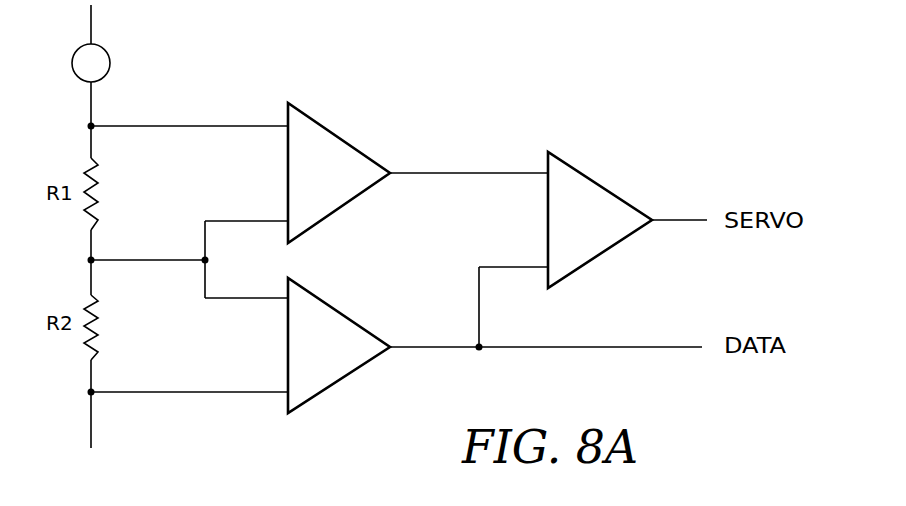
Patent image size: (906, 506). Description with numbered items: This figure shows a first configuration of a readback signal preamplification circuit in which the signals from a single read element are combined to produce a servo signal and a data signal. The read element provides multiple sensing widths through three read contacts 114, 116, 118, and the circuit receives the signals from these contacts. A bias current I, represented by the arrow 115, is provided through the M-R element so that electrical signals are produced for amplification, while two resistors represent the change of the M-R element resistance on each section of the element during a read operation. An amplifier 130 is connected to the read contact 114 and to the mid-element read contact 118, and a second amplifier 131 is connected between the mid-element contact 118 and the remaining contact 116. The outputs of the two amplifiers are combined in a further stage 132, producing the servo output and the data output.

The bias current 115 is at (104, 45).
The read contact 114 is at (143, 125).
The mid-element read contact 118 is at (143, 258).
The read contact 116 is at (143, 390).
The amplifier 130 is at (318, 125).
The second amplifier 131 is at (318, 297).
The summing amplifier 132 is at (593, 180).